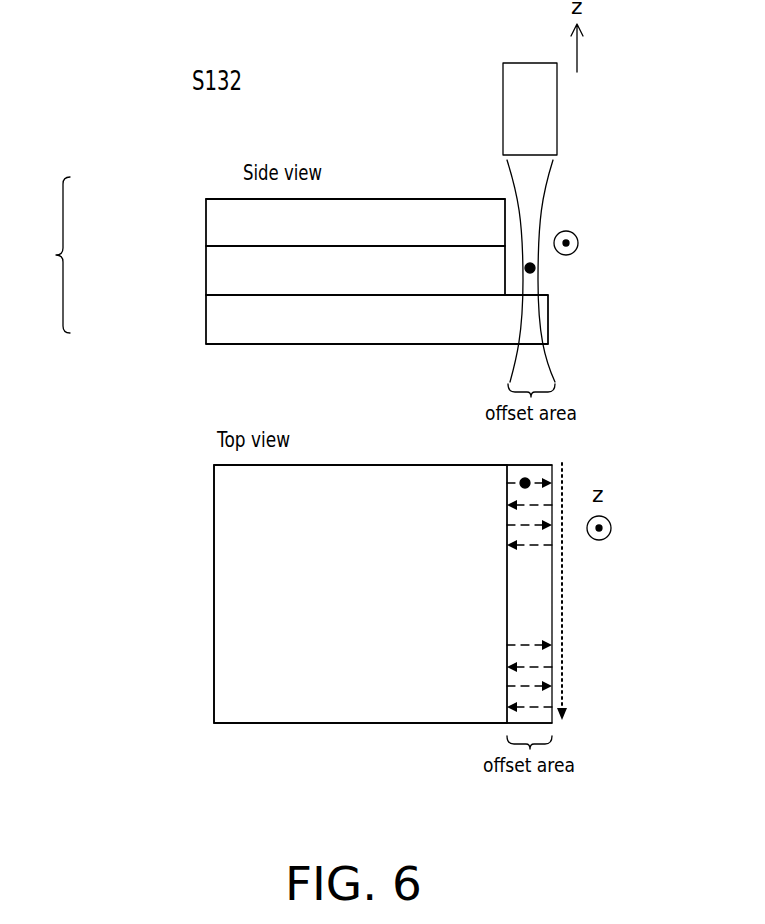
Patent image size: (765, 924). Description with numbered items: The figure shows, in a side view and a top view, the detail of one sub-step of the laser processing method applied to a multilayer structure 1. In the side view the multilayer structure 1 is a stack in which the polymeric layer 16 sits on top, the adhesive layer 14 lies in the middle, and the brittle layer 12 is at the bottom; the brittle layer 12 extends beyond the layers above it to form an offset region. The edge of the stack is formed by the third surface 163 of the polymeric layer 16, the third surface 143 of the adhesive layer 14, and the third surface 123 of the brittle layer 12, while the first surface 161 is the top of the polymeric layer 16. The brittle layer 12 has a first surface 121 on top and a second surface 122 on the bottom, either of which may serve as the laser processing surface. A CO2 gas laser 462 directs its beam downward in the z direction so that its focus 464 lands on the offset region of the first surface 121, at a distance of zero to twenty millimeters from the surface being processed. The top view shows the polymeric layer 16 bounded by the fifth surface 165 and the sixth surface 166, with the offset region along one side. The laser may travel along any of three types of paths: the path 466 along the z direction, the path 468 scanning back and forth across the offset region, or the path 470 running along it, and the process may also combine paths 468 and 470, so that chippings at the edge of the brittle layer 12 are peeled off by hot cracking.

The multilayer structure 1 is at (292, 260).
The polymeric layer 16 is at (233, 208).
The adhesive layer 14 is at (213, 288).
The brittle layer 12 is at (217, 335).
The third surface 163 is at (195, 228).
The third surface 143 is at (195, 275).
The third surface 123 is at (195, 327).
The first surface 161 is at (380, 187).
The CO2 gas laser 462 is at (545, 102).
The path 466 is at (570, 231).
The focus 464 is at (537, 269).
The first surface 121 is at (552, 298).
The second surface 122 is at (494, 351).
The fifth surface 165 is at (383, 455).
The sixth surface 166 is at (384, 733).
The path 468 is at (533, 686).
The path 470 is at (555, 725).